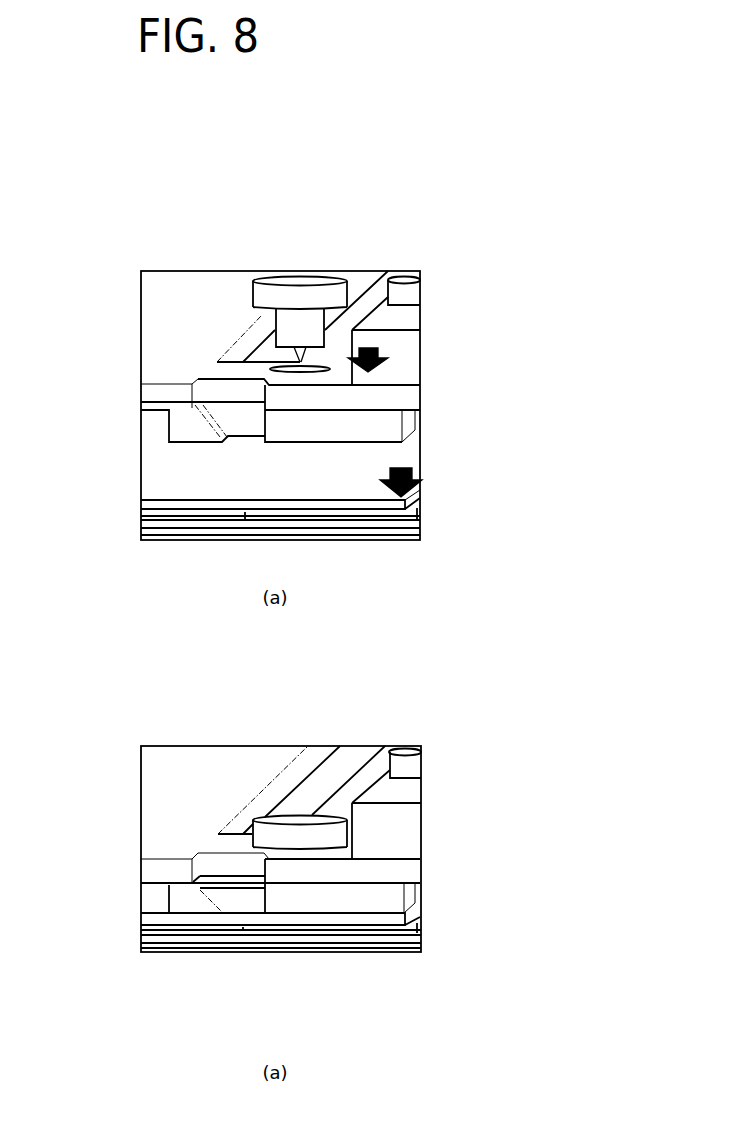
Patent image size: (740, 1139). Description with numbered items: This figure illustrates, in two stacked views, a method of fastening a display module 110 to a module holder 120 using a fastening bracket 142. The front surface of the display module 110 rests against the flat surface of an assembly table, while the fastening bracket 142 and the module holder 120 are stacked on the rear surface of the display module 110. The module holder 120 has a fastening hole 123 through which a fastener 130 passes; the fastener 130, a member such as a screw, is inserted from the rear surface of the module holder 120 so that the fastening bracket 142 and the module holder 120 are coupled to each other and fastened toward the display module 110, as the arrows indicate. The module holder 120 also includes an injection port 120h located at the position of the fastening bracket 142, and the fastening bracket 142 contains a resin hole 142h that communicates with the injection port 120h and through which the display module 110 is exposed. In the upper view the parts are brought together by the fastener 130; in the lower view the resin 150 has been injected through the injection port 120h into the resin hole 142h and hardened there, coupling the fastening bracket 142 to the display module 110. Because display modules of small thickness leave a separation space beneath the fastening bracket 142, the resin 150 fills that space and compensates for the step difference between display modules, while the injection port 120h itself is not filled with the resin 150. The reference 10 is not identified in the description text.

The substrate 10 is at (165, 527).
The display module 110 is at (377, 503).
The module holder 120 is at (165, 368).
The injection port 120h is at (260, 355).
The fastening hole 123 is at (300, 370).
The fastener 130 is at (305, 287).
The fastening bracket 142 is at (182, 438).
The resin hole 142h is at (242, 418).
The resin 150 is at (225, 897).